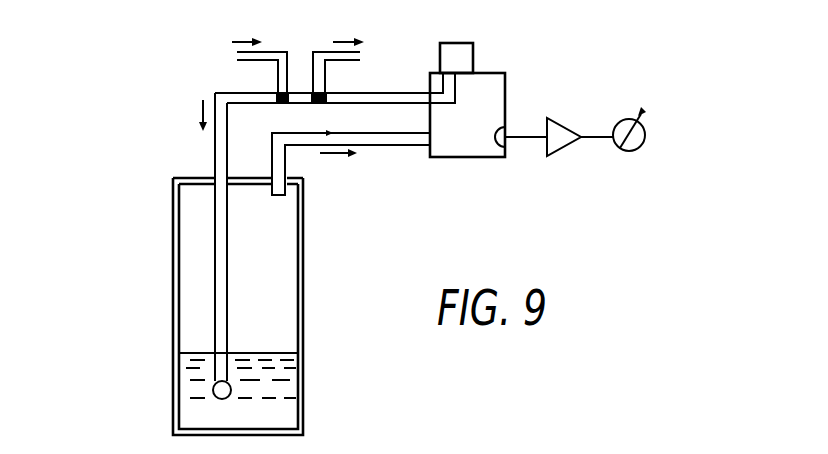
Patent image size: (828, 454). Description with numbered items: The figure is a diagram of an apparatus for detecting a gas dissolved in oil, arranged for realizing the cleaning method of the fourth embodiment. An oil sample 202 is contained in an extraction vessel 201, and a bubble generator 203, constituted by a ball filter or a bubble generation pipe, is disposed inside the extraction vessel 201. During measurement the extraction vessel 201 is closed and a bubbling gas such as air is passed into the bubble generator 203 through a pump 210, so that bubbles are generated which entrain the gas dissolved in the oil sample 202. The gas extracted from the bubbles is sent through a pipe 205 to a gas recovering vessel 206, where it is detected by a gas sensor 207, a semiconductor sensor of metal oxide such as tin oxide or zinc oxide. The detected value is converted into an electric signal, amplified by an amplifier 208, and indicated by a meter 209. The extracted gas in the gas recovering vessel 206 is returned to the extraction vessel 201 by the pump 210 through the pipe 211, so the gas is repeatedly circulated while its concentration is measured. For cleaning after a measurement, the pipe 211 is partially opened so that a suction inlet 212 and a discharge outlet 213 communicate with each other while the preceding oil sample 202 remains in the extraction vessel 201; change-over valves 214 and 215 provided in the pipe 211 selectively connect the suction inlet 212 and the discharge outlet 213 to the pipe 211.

The extraction vessel 201 is at (173, 322).
The oil sample 202 is at (303, 408).
The bubble generator 203 is at (213, 390).
The pipe 205 is at (383, 148).
The gas recovering vessel 206 is at (463, 160).
The gas sensor 207 is at (490, 160).
The amplifier 208 is at (565, 158).
The meter 209 is at (634, 151).
The pump 210 is at (473, 58).
The pipe 211 is at (388, 92).
The suction inlet 212 is at (235, 55).
The discharge outlet 213 is at (362, 50).
The change-over valve 214 is at (273, 105).
The change-over valve 215 is at (308, 94).